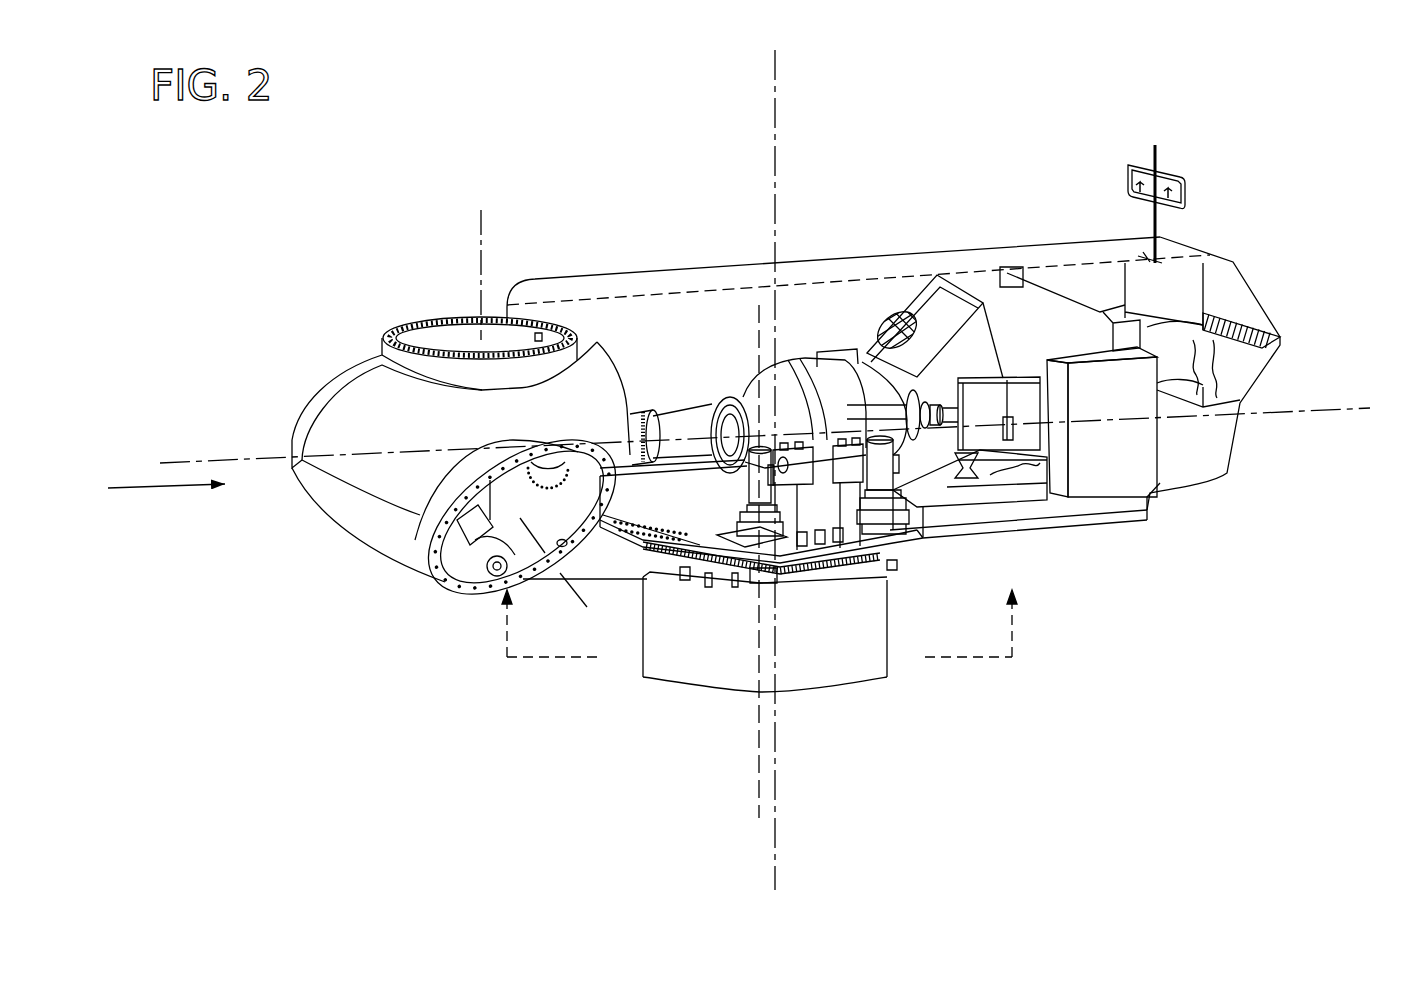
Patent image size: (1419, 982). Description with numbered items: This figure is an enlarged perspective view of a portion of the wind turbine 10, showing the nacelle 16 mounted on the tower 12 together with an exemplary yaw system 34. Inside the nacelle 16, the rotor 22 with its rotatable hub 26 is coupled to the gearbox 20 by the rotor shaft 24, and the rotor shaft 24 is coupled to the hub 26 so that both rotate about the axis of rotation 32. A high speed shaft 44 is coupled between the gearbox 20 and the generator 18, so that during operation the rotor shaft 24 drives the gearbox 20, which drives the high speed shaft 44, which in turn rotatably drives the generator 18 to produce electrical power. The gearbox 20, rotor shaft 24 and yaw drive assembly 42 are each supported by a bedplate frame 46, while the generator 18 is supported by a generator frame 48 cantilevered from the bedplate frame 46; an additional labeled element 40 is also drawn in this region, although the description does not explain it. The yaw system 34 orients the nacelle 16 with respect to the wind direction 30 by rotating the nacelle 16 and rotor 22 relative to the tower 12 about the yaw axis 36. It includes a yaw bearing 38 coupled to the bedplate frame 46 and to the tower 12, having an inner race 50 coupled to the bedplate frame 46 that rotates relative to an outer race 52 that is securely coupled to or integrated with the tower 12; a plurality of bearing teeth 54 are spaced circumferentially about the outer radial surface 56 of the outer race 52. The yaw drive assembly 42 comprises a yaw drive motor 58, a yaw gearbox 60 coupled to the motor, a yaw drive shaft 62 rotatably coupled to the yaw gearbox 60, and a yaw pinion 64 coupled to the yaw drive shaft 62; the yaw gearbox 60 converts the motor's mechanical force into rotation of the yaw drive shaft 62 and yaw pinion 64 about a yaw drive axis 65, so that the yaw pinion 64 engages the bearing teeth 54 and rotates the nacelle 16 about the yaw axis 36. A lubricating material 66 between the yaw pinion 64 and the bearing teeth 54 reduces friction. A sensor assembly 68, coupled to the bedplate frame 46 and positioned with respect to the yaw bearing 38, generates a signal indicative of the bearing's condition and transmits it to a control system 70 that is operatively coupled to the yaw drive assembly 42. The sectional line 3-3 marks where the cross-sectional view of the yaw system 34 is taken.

The wind turbine 10 is at (358, 198).
The tower 12 is at (880, 680).
The nacelle 16 is at (904, 246).
The generator 18 is at (1043, 287).
The gearbox 20 is at (858, 350).
The rotor 22 is at (326, 304).
The rotor shaft 24 is at (655, 396).
The hub 26 is at (350, 535).
The wind direction 30 is at (133, 487).
The axis of rotation 32 is at (1345, 408).
The yaw system 34 is at (1017, 578).
The yaw axis 36 is at (775, 848).
The yaw bearing 38 is at (645, 607).
The bedplate 40 is at (648, 630).
The yaw drive assembly 42 is at (740, 490).
The high speed shaft 44 is at (995, 300).
The bedplate frame 46 is at (630, 580).
The generator frame 48 is at (1058, 517).
The inner race 50 is at (866, 580).
The outer race 52 is at (863, 580).
The bearing teeth 54 is at (803, 577).
The outer radial surface 56 is at (893, 573).
The yaw drive motor 58 is at (740, 440).
The yaw gearbox 60 is at (740, 514).
The yaw drive shaft 62 is at (733, 532).
The yaw pinion 64 is at (746, 587).
The yaw drive axis 65 is at (757, 757).
The lubricating material 66 is at (697, 585).
The sensor assembly 68 is at (643, 668).
The control system 70 is at (1137, 463).
The sectional line 3- 3 is at (758, 640).